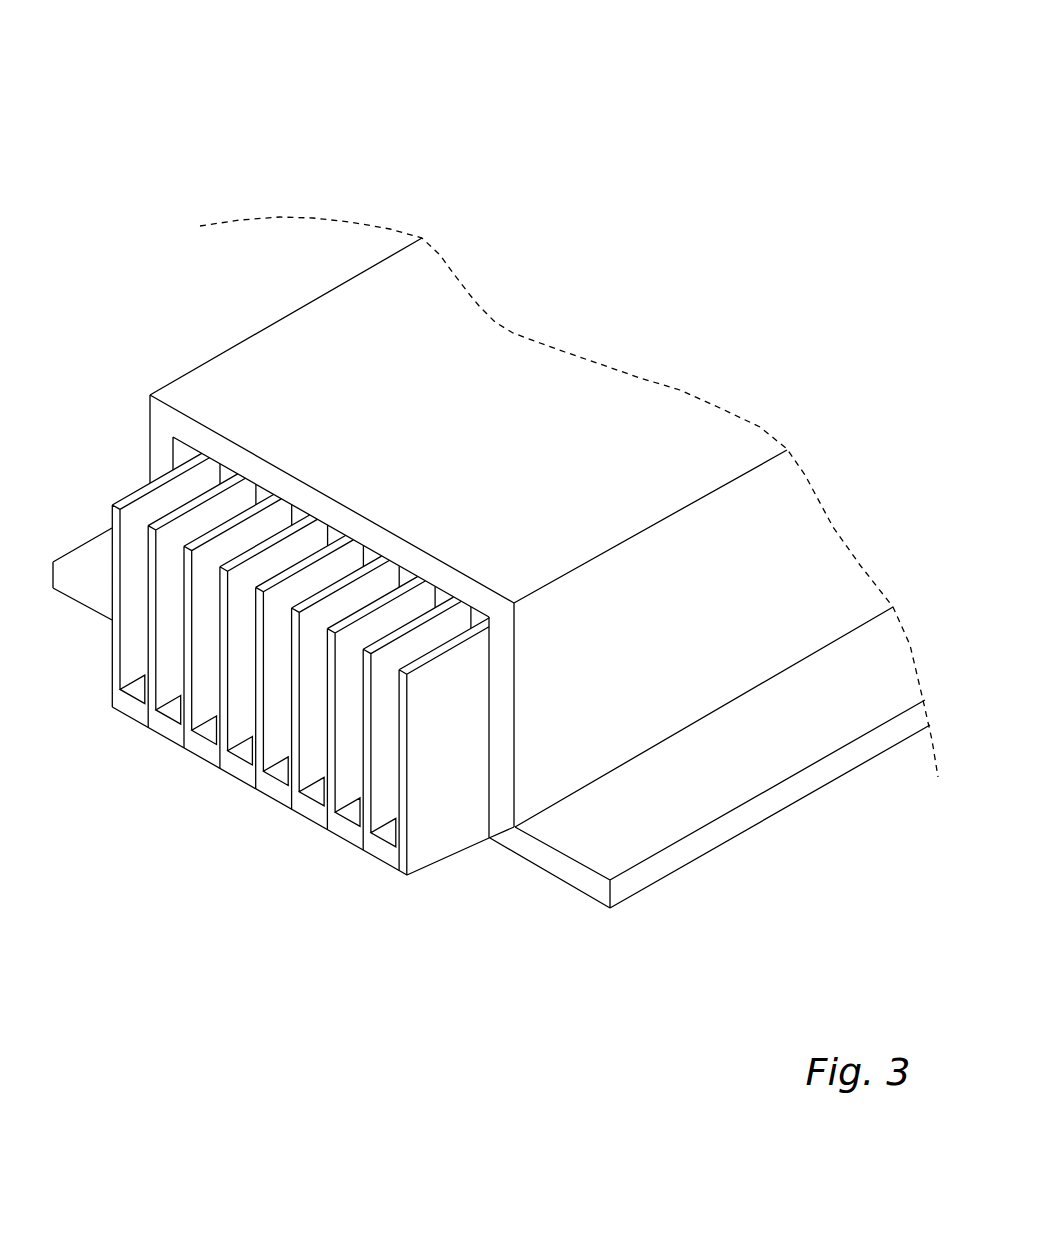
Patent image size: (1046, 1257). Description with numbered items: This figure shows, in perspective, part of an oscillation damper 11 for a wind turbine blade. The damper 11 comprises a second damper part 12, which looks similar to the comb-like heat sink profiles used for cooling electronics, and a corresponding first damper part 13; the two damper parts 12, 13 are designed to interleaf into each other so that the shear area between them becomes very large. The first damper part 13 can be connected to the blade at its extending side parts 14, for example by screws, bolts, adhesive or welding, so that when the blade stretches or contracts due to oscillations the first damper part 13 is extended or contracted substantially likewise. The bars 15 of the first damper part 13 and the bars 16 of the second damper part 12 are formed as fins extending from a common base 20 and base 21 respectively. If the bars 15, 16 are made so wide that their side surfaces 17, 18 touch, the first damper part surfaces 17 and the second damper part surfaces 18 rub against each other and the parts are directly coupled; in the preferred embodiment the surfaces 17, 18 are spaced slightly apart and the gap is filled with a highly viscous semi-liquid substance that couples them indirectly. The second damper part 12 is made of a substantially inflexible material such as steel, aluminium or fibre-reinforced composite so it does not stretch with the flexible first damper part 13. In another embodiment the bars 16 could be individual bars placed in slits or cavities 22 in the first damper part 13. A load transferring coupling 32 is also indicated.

The oscillation damper 11 is at (205, 159).
The second damper part 12 is at (230, 718).
The first damper part 13 is at (592, 269).
The side part 14 is at (710, 841).
The bar of first damper part 15 is at (409, 322).
The bar of second damper part 16 is at (299, 664).
The first damper part surface 17 is at (675, 490).
The second damper part surface 18 is at (650, 690).
The base of first damper part 20 is at (332, 420).
The base of second damper part 21 is at (296, 869).
The cavity 22 is at (465, 436).
The load transferring coupling 32 is at (345, 435).